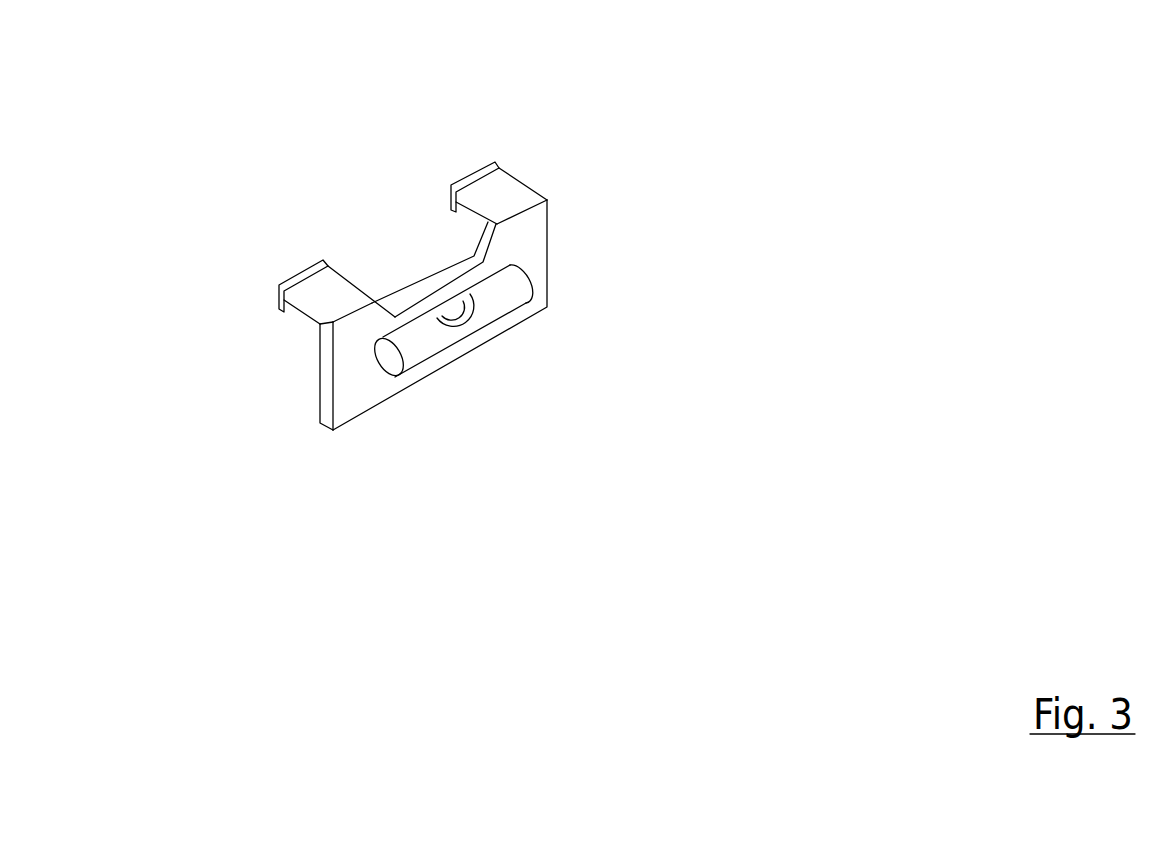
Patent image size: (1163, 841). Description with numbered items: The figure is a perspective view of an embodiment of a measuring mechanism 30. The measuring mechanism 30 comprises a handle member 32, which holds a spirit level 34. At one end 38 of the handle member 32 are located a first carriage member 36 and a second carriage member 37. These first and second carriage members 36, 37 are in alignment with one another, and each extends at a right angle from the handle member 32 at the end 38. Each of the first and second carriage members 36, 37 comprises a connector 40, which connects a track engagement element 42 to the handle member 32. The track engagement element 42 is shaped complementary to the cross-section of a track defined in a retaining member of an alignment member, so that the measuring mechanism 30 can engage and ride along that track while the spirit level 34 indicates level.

The measuring mechanism 30 is at (493, 140).
The handle member 32 is at (535, 248).
The spirit level 34 is at (508, 293).
The first carriage member 36 is at (328, 283).
The second carriage member 37 is at (502, 192).
The end of the handle member 38 is at (547, 200).
The connector 40 is at (356, 292).
The track engagement element 42 is at (470, 172).